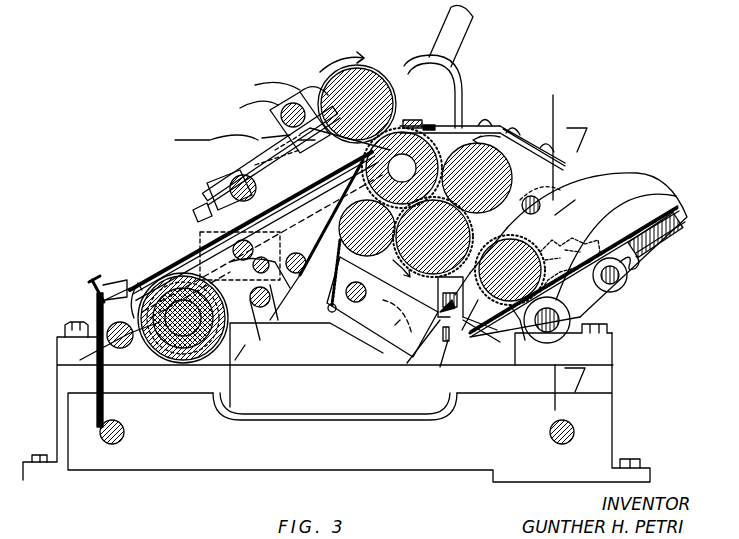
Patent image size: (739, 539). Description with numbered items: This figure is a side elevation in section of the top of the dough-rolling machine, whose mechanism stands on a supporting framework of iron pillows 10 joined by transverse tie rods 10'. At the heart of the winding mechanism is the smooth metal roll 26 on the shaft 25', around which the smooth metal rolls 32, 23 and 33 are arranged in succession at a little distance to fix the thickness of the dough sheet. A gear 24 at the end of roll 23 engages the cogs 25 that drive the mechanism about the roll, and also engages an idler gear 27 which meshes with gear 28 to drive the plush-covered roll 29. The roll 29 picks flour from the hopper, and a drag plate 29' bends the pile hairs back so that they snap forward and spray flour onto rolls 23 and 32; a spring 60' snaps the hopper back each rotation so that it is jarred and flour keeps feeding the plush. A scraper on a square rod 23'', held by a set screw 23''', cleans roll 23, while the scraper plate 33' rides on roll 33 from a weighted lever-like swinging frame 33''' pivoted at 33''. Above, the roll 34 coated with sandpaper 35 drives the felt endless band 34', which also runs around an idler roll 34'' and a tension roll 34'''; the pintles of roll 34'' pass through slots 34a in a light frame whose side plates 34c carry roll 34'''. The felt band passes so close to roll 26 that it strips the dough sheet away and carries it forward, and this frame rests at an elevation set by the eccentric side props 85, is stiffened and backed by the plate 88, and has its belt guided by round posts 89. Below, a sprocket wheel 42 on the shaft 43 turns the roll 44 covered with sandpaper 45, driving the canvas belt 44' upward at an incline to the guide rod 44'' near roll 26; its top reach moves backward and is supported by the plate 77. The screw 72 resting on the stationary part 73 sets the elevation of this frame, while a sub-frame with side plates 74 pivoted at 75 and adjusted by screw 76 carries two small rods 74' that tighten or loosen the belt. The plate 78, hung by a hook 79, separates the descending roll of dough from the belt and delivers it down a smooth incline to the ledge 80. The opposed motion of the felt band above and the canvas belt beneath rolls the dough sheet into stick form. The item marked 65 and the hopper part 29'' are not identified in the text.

The iron pillows 10 is at (338, 288).
The transverse tie rods 10' is at (603, 432).
The roll 23 is at (398, 317).
The square rod 23'' is at (422, 353).
The set screw 23''' is at (450, 360).
The gear 24 is at (427, 309).
The cogs 25 is at (429, 145).
The shaft 25' is at (415, 106).
The smooth metal roll 26 is at (434, 116).
The idler gear 27 is at (538, 191).
The gear 28 is at (543, 228).
The roll 29 is at (574, 271).
The drag plate 29' is at (572, 184).
The tray 29'' is at (594, 254).
The smooth metal roll 32 is at (492, 145).
The roll 33 is at (382, 306).
The scraper plate 33' is at (321, 283).
The pivot 33'' is at (347, 321).
The lever-like swinging frame 33''' is at (370, 352).
The roll 34 is at (359, 93).
The endless band 34' is at (297, 79).
The idler roll 34'' is at (261, 164).
The tension roll 34''' is at (266, 109).
The slots 34a is at (270, 152).
The side plates 34c is at (275, 120).
The sandpaper 35 is at (325, 71).
The sprocket wheel 42 is at (85, 358).
The shaft 43 is at (170, 340).
The roll 44 is at (183, 331).
The canvas belt 44' is at (124, 420).
The guide rod 44'' is at (265, 136).
The sandpaper 45 is at (160, 318).
The spring 60' is at (644, 249).
The hood 65 is at (470, 35).
The screw 72 is at (230, 233).
The stationary part 73 is at (330, 276).
The side plates of sub-frame 74 is at (253, 279).
The small rods 74' is at (285, 323).
The pivot 75 is at (245, 331).
The adjusting screw 76 is at (243, 364).
The plate 77 is at (230, 240).
The plate 78 is at (97, 303).
The hook 79 is at (110, 330).
The ledge 80 is at (95, 288).
The side props 85 is at (175, 140).
The plate 88 is at (262, 84).
The round posts 89 is at (240, 108).